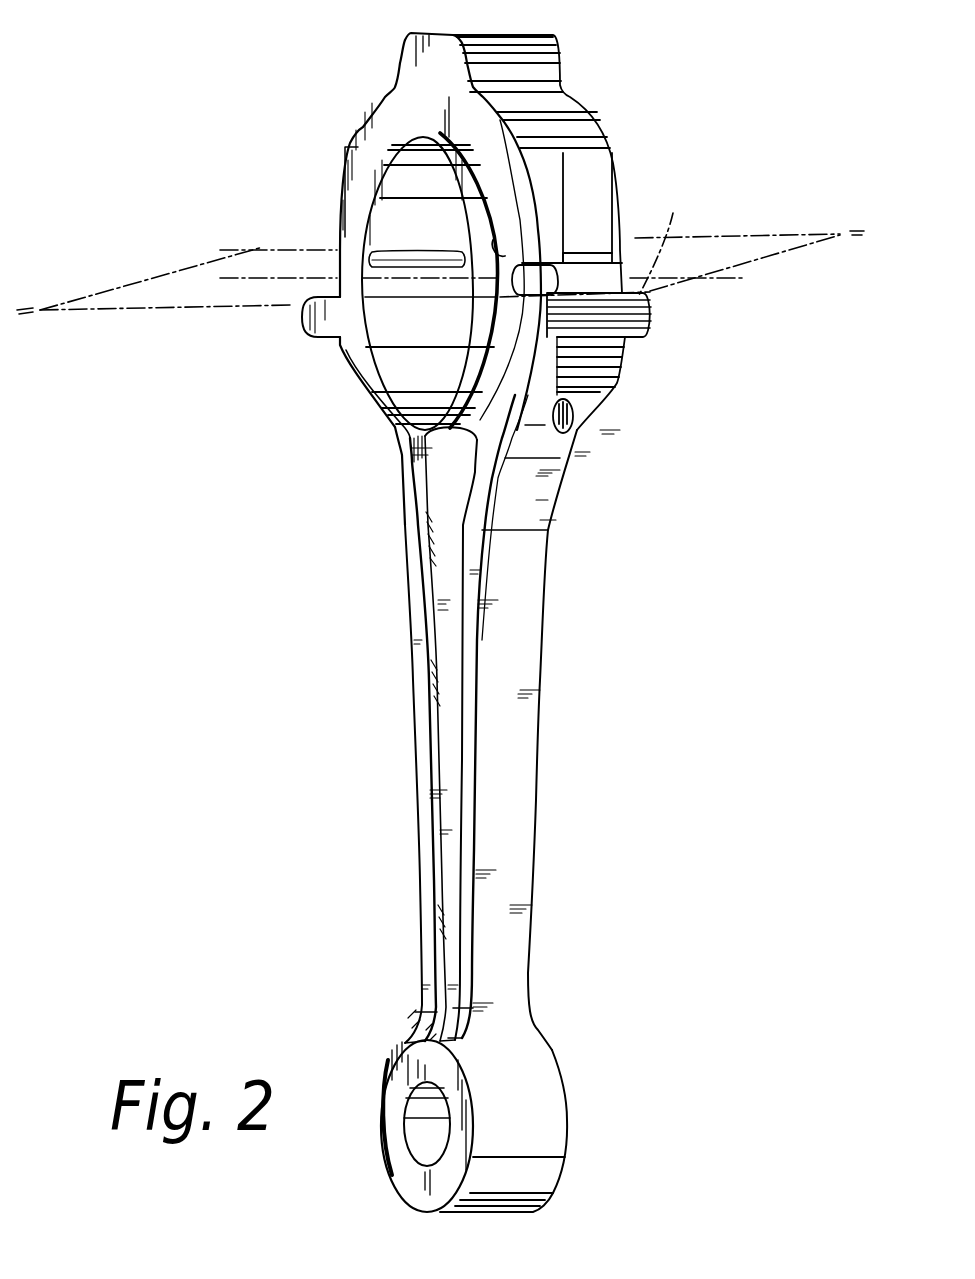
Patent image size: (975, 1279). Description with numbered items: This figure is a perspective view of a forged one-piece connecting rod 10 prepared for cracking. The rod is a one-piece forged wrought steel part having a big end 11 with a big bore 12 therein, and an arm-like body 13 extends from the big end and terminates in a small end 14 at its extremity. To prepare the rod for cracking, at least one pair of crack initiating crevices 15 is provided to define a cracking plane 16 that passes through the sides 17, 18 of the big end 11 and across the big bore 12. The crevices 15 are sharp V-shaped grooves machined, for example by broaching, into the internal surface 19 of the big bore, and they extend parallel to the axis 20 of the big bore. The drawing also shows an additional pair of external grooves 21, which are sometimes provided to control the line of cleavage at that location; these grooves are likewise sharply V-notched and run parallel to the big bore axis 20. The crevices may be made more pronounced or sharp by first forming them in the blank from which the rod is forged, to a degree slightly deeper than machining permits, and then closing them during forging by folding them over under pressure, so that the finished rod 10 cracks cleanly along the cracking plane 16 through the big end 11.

The connecting rod 10 is at (576, 540).
The big end 11 is at (362, 398).
The big bore 12 is at (495, 242).
The arm-like body 13 is at (417, 758).
The small end 14 is at (570, 1138).
The crack initiating crevices 15 is at (428, 268).
The cracking plane 16 is at (233, 305).
The side of the big end 17 is at (340, 347).
The side of the big end 18 is at (600, 366).
The internal surface of the big bore 19 is at (411, 222).
The axis of the big bore 20 is at (673, 213).
The external grooves 21 is at (608, 304).